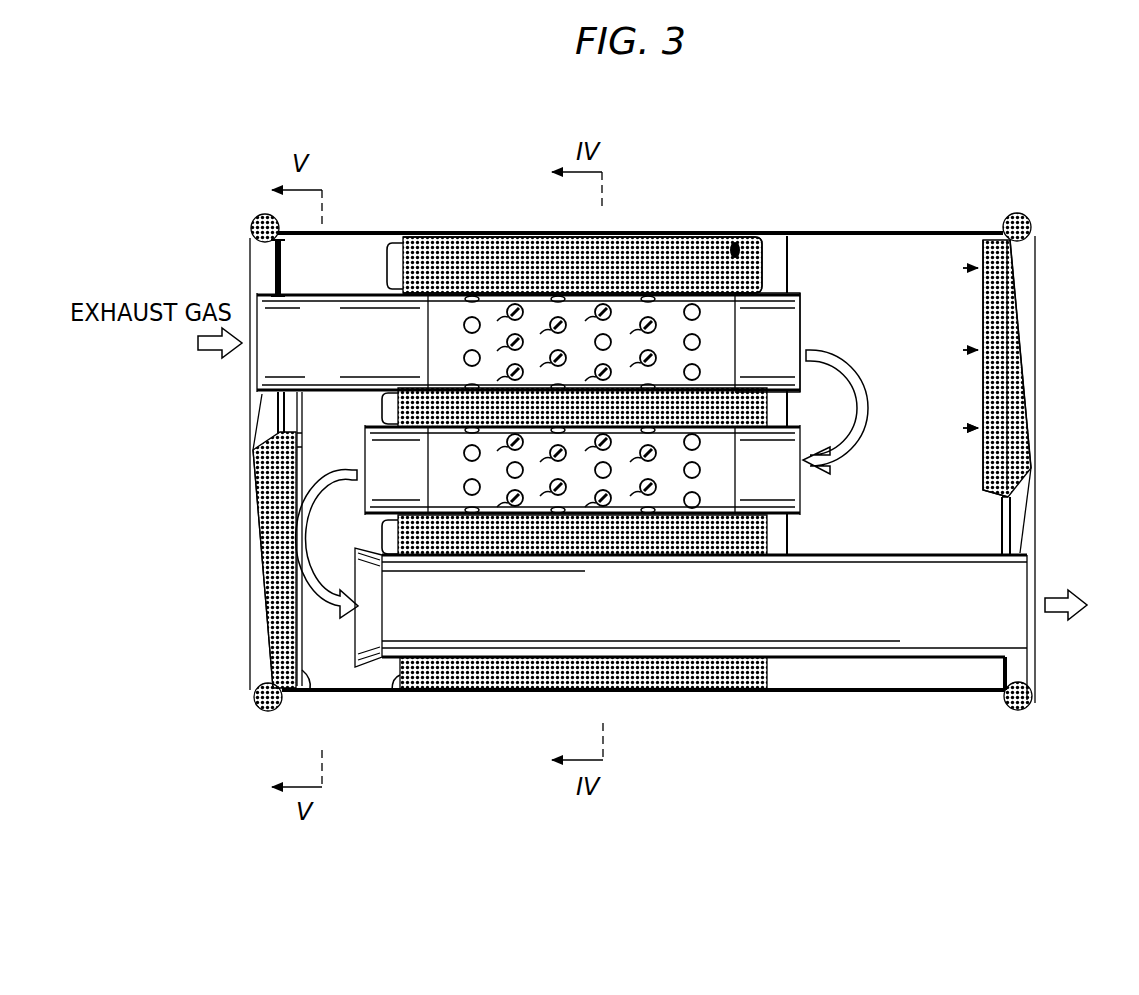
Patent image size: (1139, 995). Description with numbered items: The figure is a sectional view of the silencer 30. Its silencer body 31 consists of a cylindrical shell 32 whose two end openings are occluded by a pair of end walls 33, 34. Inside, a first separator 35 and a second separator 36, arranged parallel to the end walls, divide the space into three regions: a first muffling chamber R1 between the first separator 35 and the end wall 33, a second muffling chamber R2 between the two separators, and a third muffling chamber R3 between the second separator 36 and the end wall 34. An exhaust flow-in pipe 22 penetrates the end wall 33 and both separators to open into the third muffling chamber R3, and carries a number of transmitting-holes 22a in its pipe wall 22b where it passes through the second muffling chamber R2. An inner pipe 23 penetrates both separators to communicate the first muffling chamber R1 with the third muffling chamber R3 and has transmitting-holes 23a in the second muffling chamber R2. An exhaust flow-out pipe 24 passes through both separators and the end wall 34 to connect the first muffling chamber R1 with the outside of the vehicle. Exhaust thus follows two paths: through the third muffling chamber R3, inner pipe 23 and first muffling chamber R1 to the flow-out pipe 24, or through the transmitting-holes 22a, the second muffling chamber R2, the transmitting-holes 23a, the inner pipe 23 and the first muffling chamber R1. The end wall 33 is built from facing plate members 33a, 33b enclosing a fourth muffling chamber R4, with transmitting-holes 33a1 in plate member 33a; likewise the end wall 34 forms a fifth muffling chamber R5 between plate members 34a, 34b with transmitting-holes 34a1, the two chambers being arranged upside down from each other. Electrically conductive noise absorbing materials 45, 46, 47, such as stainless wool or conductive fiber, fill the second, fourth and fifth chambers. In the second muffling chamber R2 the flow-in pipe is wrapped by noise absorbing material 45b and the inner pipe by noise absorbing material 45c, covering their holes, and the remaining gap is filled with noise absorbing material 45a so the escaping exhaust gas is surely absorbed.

The exhaust flow-in pipe 22 is at (796, 290).
The transmitting-holes 22a is at (522, 333).
The pipe wall 22b is at (800, 300).
The inner pipe 23 is at (804, 494).
The transmitting-holes 23a is at (598, 466).
The exhaust flow-out pipe 24 is at (961, 659).
The silencer 30 is at (914, 217).
The silencer body 31 is at (708, 228).
The cylindrical shell 32 is at (641, 236).
The end wall 33 is at (264, 628).
The plate member 33a is at (306, 690).
The transmitting-holes 33a1 is at (304, 444).
The plate member 33b is at (262, 574).
The end wall 34 is at (1010, 258).
The plate member 34a is at (984, 242).
The transmitting-holes 34a1 is at (982, 310).
The plate member 34b is at (1012, 313).
The first separator 35 is at (394, 690).
The second separator 36 is at (762, 690).
The noise absorbing material 45 is at (466, 187).
The noise absorbing material 45a is at (455, 242).
The noise absorbing material 45b is at (400, 243).
The noise absorbing material 45c is at (386, 403).
The noise absorbing material 46 is at (257, 473).
The noise absorbing material 47 is at (1012, 435).
The first muffling chamber R1 is at (296, 262).
The second muffling chamber R2 is at (738, 243).
The third muffling chamber R3 is at (960, 379).
The fourth muffling chamber R4 is at (258, 508).
The fifth muffling chamber R5 is at (1012, 405).